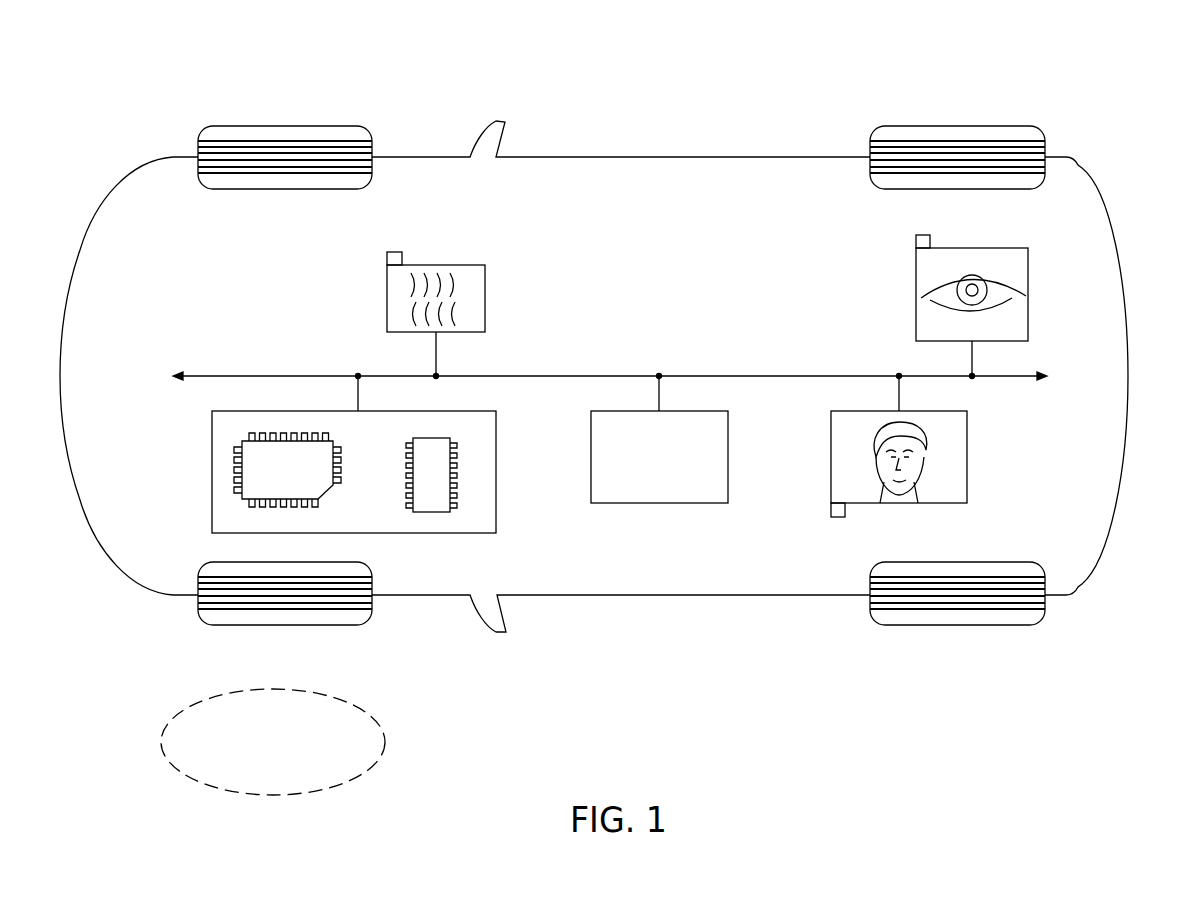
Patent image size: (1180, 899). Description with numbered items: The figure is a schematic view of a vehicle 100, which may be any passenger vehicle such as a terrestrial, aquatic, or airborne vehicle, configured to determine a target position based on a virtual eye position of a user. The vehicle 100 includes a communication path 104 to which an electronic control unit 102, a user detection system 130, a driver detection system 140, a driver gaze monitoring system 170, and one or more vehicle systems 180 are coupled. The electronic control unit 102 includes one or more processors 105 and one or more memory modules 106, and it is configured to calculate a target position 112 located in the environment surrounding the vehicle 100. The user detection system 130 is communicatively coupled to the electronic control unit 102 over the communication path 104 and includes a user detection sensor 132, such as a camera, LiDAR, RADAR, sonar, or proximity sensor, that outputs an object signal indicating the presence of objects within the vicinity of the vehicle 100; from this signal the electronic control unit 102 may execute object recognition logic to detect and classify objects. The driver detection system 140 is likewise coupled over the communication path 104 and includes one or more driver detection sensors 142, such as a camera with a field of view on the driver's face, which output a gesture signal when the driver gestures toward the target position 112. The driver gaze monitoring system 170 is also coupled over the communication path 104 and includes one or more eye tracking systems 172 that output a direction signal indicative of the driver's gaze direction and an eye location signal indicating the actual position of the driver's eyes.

The vehicle 100 is at (973, 112).
The electronic control unit 102 is at (497, 469).
The communication path 104 is at (250, 375).
The processor 105 is at (330, 491).
The memory module 106 is at (410, 443).
The target position 112 is at (363, 709).
The user detection system 130 is at (487, 298).
The user detection sensor 132 is at (395, 251).
The driver detection system 140 is at (968, 456).
The driver detection sensor 142 is at (838, 518).
The driver gaze monitoring system 170 is at (1030, 298).
The eye tracking system 172 is at (928, 234).
The vehicle system 180 is at (730, 455).